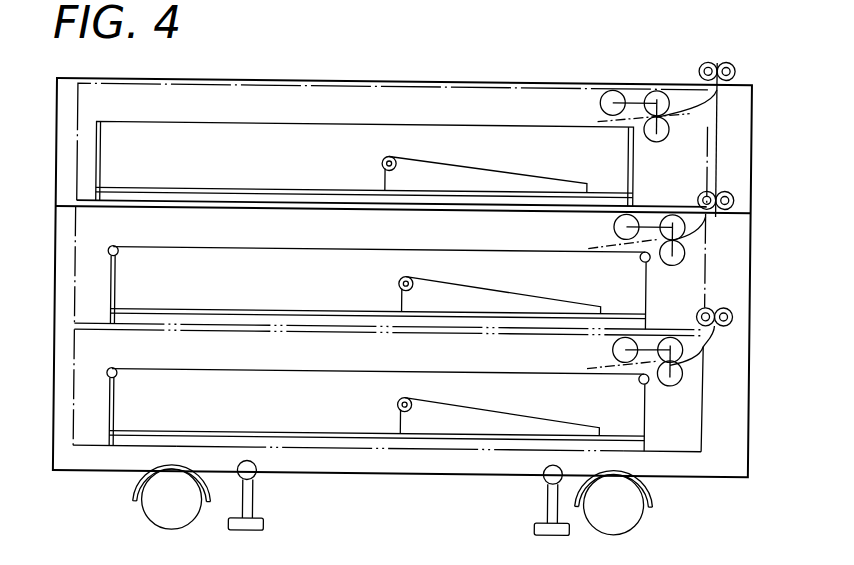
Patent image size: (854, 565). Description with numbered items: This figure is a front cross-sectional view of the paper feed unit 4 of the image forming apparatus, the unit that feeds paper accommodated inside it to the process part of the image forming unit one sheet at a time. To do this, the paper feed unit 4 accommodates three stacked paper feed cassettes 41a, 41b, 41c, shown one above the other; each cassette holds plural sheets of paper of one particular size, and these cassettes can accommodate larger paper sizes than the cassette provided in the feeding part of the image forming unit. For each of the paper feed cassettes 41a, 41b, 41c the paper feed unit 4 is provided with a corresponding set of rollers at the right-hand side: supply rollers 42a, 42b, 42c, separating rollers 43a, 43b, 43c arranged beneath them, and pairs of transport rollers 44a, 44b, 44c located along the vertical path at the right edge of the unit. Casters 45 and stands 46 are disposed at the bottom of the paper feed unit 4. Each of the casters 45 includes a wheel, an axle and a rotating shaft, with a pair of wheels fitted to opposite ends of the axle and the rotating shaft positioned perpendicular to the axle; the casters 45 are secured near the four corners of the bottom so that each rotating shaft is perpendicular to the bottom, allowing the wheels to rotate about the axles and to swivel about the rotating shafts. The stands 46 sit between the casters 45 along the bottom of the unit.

The paper feed unit 4 is at (752, 121).
The paper feed cassette 41a is at (97, 167).
The paper feed cassette 41b is at (113, 286).
The paper feed cassette 41c is at (112, 412).
The supply roller 42a is at (600, 97).
The supply roller 42b is at (616, 221).
The supply roller 42c is at (616, 344).
The separating roller 43a is at (657, 136).
The separating roller 43b is at (674, 259).
The separating roller 43c is at (673, 380).
The transport roller 44a is at (735, 64).
The transport roller 44b is at (735, 193).
The transport roller 44c is at (735, 310).
The caster 45 is at (160, 526).
The stand 46 is at (260, 528).